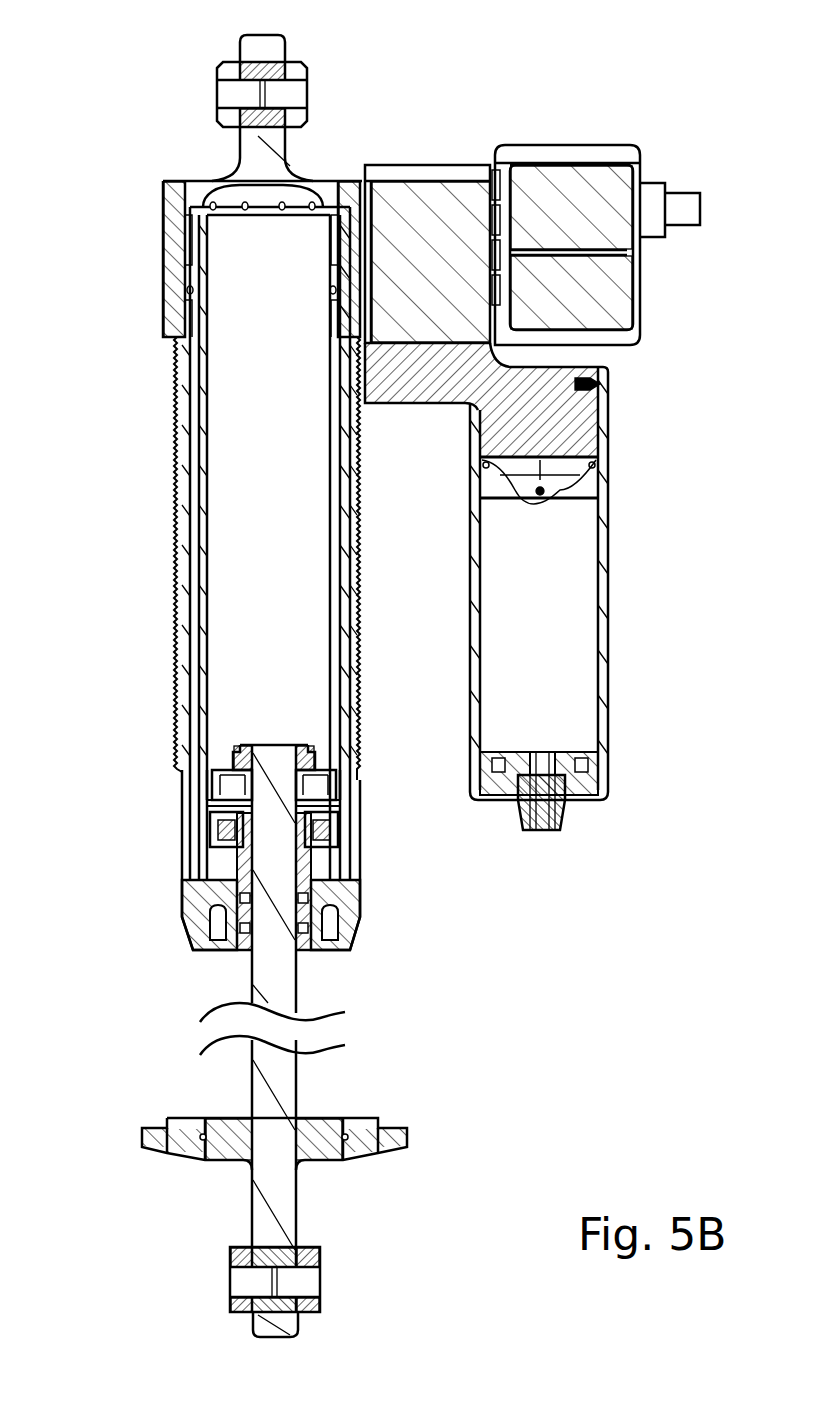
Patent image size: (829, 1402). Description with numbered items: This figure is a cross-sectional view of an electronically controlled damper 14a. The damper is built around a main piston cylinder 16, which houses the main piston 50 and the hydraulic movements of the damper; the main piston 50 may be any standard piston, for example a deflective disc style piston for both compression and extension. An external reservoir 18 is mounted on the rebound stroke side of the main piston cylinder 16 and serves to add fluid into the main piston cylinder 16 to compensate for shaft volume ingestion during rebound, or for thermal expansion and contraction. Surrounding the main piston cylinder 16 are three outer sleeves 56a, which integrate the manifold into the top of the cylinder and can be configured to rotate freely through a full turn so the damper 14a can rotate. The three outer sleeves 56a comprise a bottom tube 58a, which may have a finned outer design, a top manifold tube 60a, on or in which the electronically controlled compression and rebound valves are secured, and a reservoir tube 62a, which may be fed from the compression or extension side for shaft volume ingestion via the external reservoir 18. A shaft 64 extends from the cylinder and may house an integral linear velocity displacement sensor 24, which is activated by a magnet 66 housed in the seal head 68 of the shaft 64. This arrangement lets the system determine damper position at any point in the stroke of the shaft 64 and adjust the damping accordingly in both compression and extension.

The electronically controlled damper 14a is at (449, 78).
The main piston cylinder 16 is at (126, 603).
The external reservoir 18 is at (612, 620).
The linear velocity displacement sensor 24 is at (265, 722).
The main piston 50 is at (310, 782).
The three outer sleeves 56a is at (112, 436).
The bottom tube 58a is at (178, 725).
The top manifold tube 60a is at (177, 292).
The reservoir tube 62a is at (207, 540).
The shaft 64 is at (282, 1095).
The magnet 66 is at (232, 822).
The seal head 68 is at (354, 804).